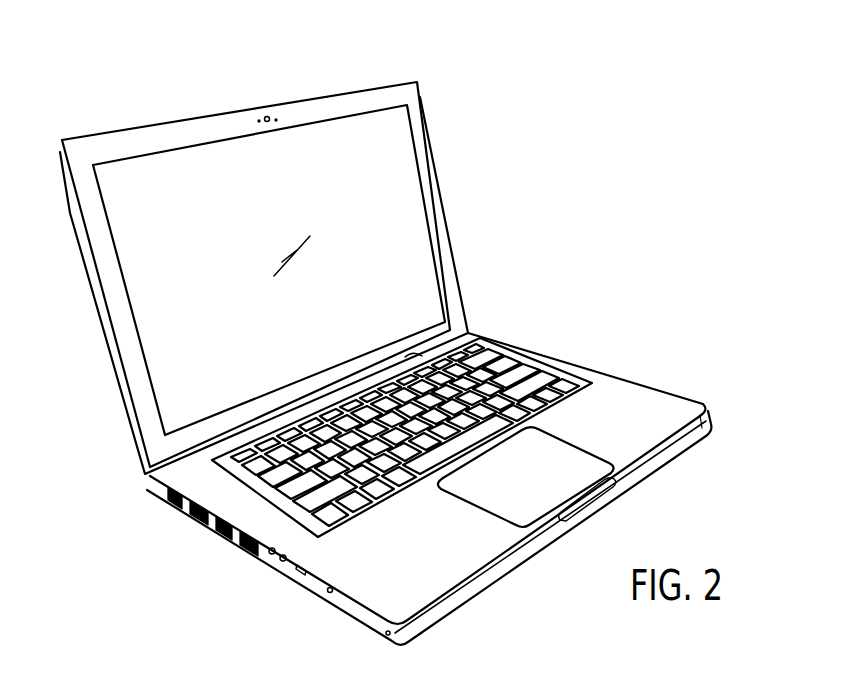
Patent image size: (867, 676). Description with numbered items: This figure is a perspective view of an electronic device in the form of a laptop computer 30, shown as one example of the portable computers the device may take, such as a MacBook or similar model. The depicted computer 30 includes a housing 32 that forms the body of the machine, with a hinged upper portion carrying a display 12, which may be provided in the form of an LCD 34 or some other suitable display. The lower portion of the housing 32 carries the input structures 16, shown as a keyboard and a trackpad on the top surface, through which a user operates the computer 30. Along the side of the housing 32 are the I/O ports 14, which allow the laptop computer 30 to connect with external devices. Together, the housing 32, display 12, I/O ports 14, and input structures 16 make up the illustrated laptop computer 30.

The laptop computer 30 is at (213, 62).
The display 12 is at (420, 211).
The LCD 34 is at (410, 170).
The input structures 16 is at (520, 371).
The housing 32 is at (631, 383).
The I/O ports 14 is at (236, 539).